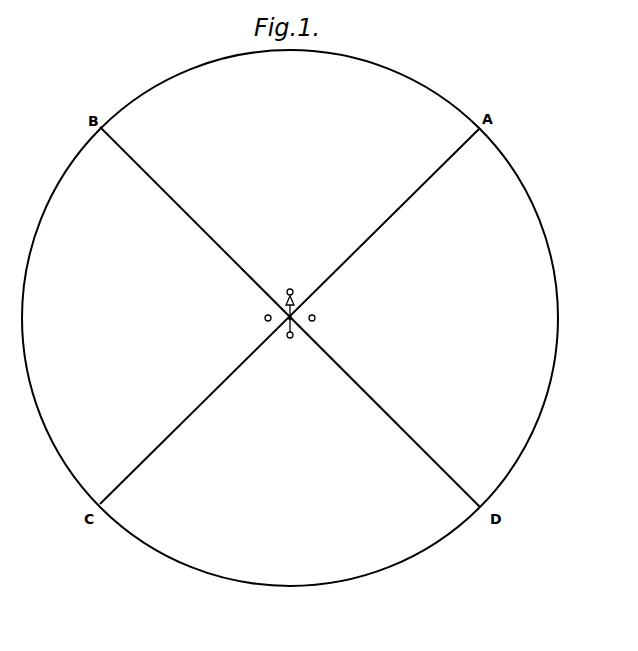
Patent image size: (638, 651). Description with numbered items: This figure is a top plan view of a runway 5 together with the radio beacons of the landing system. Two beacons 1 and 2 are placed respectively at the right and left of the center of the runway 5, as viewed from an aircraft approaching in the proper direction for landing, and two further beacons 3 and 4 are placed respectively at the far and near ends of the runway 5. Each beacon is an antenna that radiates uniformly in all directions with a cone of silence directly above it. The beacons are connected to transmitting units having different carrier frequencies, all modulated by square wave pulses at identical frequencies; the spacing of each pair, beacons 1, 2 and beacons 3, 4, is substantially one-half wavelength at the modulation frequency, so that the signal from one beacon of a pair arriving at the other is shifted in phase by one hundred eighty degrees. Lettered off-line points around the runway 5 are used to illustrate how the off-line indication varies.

The beacon 1 is at (317, 318).
The beacon 2 is at (262, 318).
The beacon 3 is at (290, 291).
The beacon 4 is at (290, 330).
The runway 5 is at (292, 321).